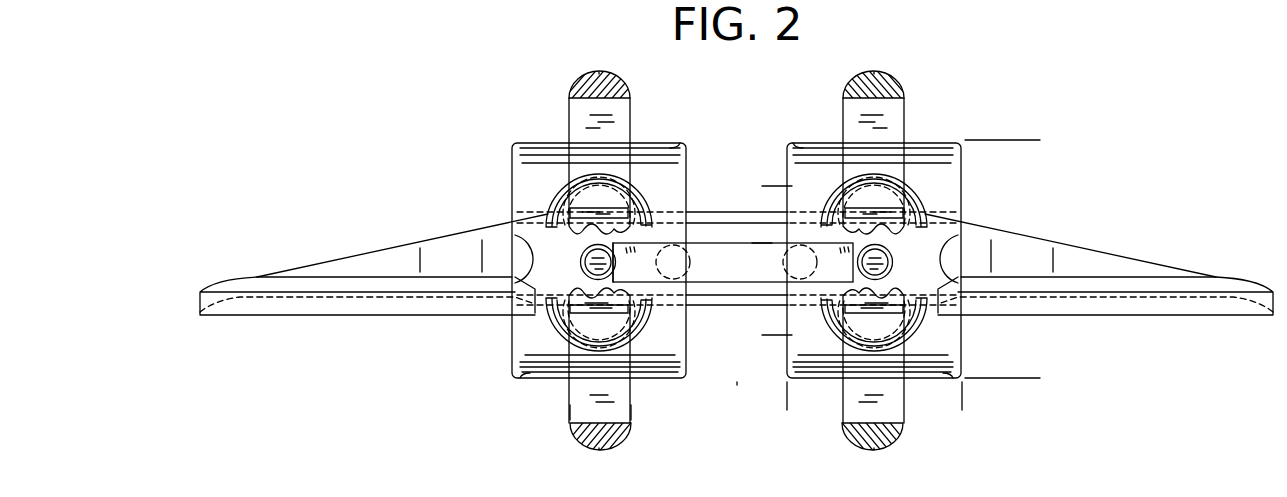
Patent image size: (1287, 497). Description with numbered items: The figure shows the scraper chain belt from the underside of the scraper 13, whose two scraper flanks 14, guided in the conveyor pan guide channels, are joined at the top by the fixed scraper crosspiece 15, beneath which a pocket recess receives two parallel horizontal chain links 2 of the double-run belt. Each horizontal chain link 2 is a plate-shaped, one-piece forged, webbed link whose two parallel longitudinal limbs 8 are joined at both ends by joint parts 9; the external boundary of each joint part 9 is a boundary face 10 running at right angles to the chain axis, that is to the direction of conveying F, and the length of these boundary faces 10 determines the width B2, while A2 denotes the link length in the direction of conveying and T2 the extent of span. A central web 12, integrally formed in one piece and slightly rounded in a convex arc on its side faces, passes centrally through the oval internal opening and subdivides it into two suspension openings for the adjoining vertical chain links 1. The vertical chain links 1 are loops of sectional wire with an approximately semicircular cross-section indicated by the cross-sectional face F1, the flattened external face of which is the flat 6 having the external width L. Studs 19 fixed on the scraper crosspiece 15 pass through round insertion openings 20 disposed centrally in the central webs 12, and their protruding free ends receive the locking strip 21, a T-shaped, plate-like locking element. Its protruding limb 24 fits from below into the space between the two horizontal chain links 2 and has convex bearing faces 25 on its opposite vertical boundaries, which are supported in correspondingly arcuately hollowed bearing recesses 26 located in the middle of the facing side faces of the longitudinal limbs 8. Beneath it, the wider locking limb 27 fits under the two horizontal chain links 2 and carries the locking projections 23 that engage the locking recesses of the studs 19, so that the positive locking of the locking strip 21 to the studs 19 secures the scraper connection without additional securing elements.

The vertical chain link 1 is at (632, 110).
The horizontal chain link 2 is at (505, 379).
The flattened external face 6 is at (569, 103).
The longitudinal limb 8 is at (513, 328).
The joint part 9 is at (527, 150).
The boundary face 10 is at (657, 143).
The central web 12 is at (628, 212).
The scraper 13 is at (1203, 260).
The scraper flank 14 is at (248, 298).
The scraper crosspiece 15 is at (710, 218).
The stud 19 is at (585, 257).
The insertion opening 20 is at (580, 264).
The locking strip 21 is at (752, 232).
The locking projection 23 is at (627, 258).
The protruding limb 24 is at (722, 276).
The convex bearing face 25 is at (676, 262).
The bearing recess 26 is at (673, 247).
The locking limb 27 is at (656, 250).
The length of horizontal chain link A2 is at (1028, 378).
The span of horizontal chain link T2 is at (772, 186).
The width of horizontal chain link B2 is at (962, 395).
The external width of flat L is at (631, 412).
The direction of conveying F is at (737, 437).
The cross-sectional face F1 is at (607, 80).